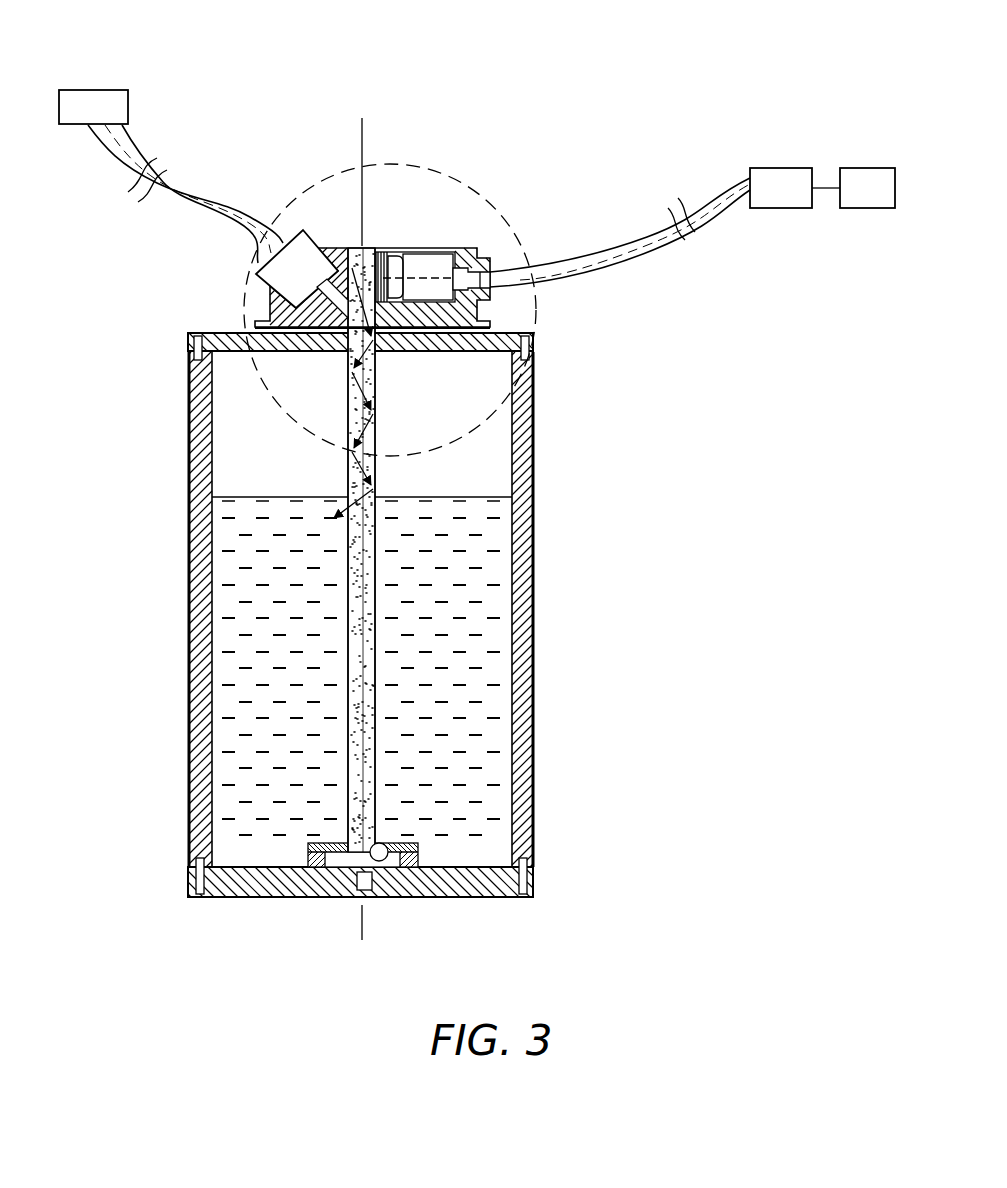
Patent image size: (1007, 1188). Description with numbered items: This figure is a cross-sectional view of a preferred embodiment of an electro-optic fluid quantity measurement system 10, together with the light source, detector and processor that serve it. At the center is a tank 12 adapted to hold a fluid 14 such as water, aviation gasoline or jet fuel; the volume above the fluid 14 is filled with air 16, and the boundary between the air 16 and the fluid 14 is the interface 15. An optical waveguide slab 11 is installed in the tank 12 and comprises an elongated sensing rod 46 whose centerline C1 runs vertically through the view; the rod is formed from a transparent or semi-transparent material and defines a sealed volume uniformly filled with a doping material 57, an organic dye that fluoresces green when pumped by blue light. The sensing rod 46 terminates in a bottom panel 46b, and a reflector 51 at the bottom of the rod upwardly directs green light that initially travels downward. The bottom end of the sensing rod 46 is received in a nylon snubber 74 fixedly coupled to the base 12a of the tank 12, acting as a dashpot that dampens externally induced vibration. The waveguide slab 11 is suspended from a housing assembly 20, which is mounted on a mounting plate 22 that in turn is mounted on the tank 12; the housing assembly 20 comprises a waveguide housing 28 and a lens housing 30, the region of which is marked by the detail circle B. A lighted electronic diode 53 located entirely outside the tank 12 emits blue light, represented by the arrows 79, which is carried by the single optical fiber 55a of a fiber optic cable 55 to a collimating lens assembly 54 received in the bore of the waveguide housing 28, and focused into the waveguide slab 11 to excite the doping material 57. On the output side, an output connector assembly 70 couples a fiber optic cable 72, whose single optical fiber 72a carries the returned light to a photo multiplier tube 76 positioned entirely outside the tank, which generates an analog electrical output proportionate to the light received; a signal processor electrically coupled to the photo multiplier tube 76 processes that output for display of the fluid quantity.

The electro-optic fluid quantity measurement system 10 is at (585, 70).
The optical waveguide slab 11 is at (388, 748).
The tank 12 is at (535, 573).
The base 12a is at (232, 862).
The fluid 14 is at (502, 735).
The interface 15 is at (498, 497).
The air 16 is at (495, 462).
The housing assembly 20 is at (390, 236).
The mounting plate 22 is at (540, 347).
The waveguide housing 28 is at (348, 246).
The lens housing 30 is at (470, 248).
The sensing rod 46 is at (346, 468).
The bottom panel 46b is at (390, 850).
The reflector 51 is at (370, 848).
The lighted electronic diode (LED) 53 is at (106, 117).
The collimating lens assembly 54 is at (309, 279).
The fiber optic cable 55 is at (188, 188).
The optical fiber 55a is at (178, 200).
The doping material 57 is at (352, 596).
The output connector assembly 70 is at (510, 258).
The fiber optic cable 72 is at (708, 192).
The optical fiber 72a is at (640, 256).
The snubber 74 is at (326, 850).
The photo multiplier tube 76 is at (793, 198).
The arrows 79 is at (372, 425).
The detail region B is at (458, 180).
The centerline C1 is at (364, 140).